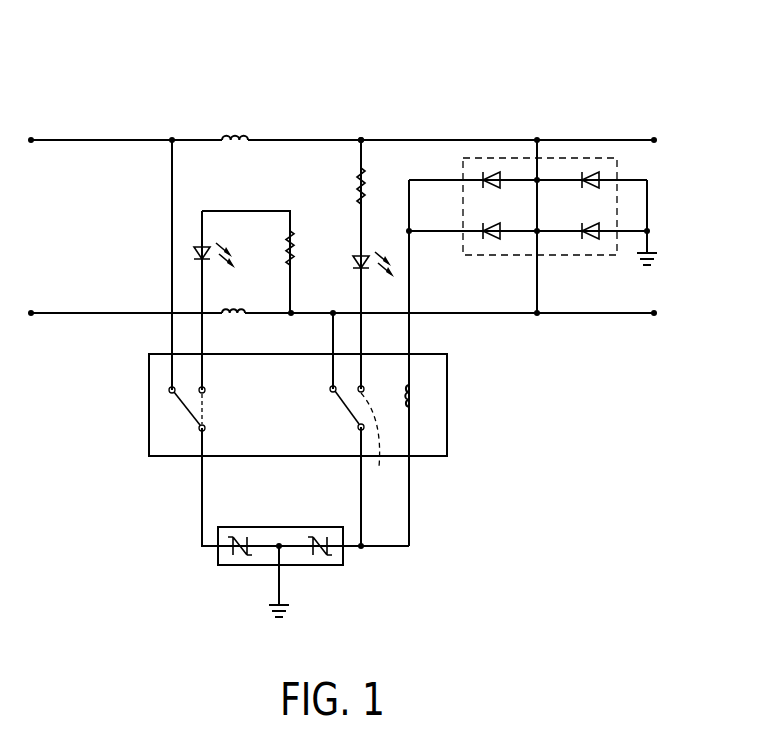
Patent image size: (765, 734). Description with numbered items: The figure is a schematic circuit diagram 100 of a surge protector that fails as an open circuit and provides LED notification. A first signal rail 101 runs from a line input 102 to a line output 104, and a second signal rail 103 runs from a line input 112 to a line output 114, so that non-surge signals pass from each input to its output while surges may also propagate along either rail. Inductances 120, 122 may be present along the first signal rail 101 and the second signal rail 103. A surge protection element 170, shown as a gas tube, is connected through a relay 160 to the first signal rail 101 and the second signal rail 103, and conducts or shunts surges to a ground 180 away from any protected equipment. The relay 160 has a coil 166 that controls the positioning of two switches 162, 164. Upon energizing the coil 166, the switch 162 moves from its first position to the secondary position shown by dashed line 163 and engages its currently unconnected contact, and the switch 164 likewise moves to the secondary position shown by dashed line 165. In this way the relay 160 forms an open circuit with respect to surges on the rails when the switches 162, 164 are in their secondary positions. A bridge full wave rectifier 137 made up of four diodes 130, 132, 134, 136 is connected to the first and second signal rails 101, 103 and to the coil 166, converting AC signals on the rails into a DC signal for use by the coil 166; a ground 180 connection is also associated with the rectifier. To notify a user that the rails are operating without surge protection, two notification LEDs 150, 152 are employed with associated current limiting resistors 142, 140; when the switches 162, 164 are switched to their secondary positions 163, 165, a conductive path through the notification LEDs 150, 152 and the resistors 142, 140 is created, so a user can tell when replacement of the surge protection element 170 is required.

The schematic circuit diagram 100 is at (133, 66).
The first signal rail 101 is at (347, 133).
The line input 102 is at (78, 139).
The second signal rail 103 is at (462, 320).
The line output 104 is at (627, 139).
The line input 112 is at (74, 313).
The line output 114 is at (603, 315).
The inductance 120 is at (236, 139).
The inductance 122 is at (245, 312).
The diode 130 is at (488, 172).
The diode 132 is at (590, 172).
The diode 134 is at (492, 240).
The diode 136 is at (592, 240).
The bridge full wave rectifier 137 is at (618, 174).
The current limiting resistor 140 is at (356, 188).
The current limiting resistor 142 is at (293, 240).
The notification LED 150 is at (197, 258).
The notification LED 152 is at (356, 268).
The relay 160 is at (149, 388).
The switch 162 is at (185, 410).
The dashed line 163 is at (206, 406).
The switch 164 is at (345, 408).
The dashed line 165 is at (378, 445).
The coil 166 is at (411, 398).
The surge protection element 170 is at (218, 553).
The ground 180 is at (283, 618).